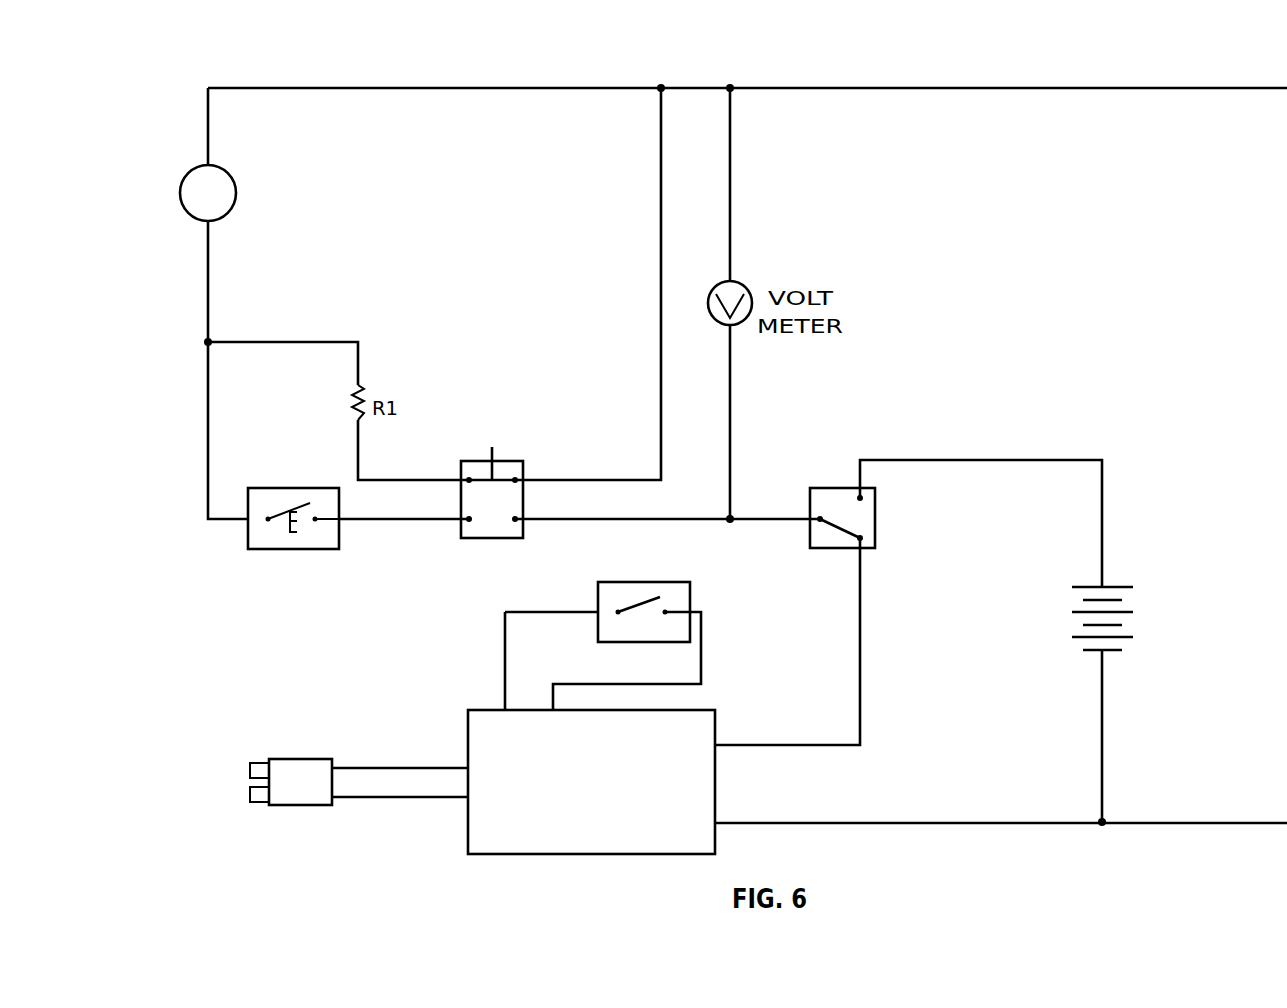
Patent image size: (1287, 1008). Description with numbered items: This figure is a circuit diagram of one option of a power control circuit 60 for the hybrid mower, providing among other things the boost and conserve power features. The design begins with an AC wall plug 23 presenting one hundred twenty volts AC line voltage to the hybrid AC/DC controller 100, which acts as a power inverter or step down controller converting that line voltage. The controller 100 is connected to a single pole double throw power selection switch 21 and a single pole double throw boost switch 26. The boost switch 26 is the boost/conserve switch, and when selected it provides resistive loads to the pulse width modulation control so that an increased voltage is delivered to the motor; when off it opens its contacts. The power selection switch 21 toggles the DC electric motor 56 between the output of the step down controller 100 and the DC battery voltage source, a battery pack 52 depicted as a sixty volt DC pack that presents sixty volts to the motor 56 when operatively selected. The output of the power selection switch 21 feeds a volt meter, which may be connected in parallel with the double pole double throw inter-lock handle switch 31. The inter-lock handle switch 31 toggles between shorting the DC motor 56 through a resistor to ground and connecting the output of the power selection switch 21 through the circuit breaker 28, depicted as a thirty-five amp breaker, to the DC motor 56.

The power control circuit 60 is at (992, 72).
The DC electric motor 56 is at (230, 193).
The circuit breaker 28 is at (255, 538).
The inter-lock handle switch 31 is at (468, 467).
The power selection switch 21 is at (830, 492).
The battery pack 52 is at (1147, 602).
The boost/conserve switch 26 is at (685, 603).
The AC wall plug 23 is at (295, 802).
The hybrid AC/DC controller 100 is at (547, 848).